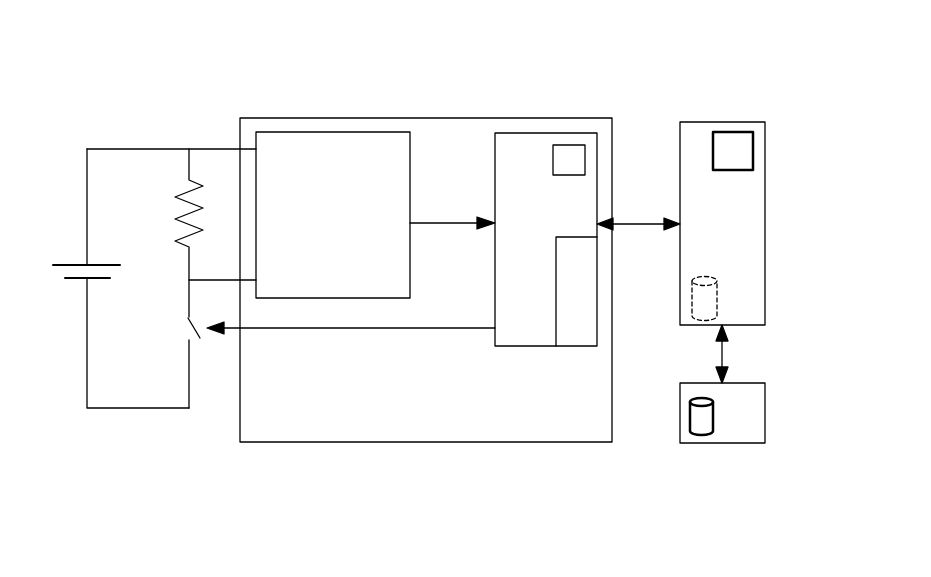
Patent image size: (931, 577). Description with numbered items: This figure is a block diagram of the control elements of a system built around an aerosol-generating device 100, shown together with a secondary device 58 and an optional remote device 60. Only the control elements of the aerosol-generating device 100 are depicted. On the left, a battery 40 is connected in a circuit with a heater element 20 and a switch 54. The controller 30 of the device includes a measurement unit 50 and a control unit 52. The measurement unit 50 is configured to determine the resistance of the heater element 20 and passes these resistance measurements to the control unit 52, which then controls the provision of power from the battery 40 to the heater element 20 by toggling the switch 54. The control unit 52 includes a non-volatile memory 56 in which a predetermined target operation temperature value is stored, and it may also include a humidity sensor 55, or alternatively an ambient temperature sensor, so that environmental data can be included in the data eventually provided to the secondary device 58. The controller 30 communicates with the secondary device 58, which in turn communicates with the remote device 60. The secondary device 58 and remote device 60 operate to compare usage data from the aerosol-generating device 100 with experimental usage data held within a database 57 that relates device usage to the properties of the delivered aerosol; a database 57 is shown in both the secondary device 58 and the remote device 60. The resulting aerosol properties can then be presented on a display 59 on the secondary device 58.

The aerosol-generating device 100 is at (278, 445).
The controller 30 is at (614, 405).
The measurement unit 50 is at (330, 132).
The control unit 52 is at (543, 133).
The humidity sensor 55 is at (578, 142).
The non-volatile memory 56 is at (576, 348).
The secondary device 58 is at (766, 222).
The display 59 is at (754, 140).
The database 57 is at (718, 297).
The remote device 60 is at (766, 412).
The battery 40 is at (68, 265).
The heater element 20 is at (177, 220).
The switch 54 is at (187, 330).